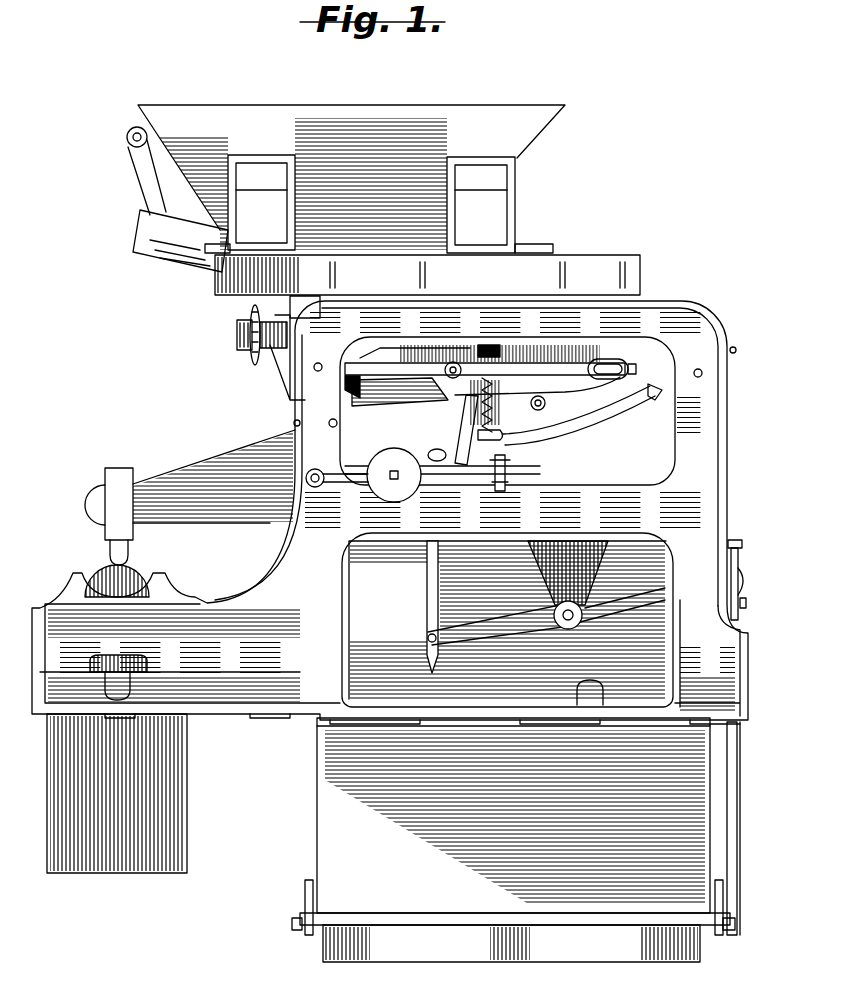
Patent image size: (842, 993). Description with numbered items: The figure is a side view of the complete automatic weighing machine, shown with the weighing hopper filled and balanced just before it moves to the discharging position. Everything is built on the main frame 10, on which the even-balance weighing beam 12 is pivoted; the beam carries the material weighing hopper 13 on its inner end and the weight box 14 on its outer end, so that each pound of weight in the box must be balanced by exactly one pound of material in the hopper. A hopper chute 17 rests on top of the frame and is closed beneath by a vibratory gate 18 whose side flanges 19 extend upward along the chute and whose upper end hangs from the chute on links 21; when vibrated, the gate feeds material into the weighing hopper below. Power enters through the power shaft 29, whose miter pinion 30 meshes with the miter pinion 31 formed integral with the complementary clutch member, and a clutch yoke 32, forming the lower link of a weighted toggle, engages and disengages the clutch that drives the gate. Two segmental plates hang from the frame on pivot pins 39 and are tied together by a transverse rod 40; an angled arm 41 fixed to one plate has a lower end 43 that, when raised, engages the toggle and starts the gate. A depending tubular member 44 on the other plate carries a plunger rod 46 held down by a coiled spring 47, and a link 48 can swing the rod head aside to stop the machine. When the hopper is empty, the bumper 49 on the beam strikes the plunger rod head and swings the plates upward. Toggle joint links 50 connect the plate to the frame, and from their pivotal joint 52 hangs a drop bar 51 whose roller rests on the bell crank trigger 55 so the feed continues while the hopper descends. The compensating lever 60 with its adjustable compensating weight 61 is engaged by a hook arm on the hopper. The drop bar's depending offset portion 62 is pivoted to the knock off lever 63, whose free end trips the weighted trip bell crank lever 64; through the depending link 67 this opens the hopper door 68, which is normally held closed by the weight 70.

The main frame 10 is at (255, 714).
The weighing beam 12 is at (226, 458).
The material weighing hopper 13 is at (356, 816).
The weight box 14 is at (64, 836).
The hopper chute 17 is at (375, 125).
The vibratory gate 18 is at (168, 262).
The side flanges 19 is at (198, 232).
The links 21 is at (142, 162).
The power shaft 29 is at (237, 331).
The miter pinion 30 is at (300, 320).
The miter pinion 31 is at (245, 355).
The clutch yoke 32 is at (306, 302).
The pivot pins 39 is at (522, 280).
The transverse rod 40 is at (538, 411).
The angled arm 41 is at (425, 390).
The lower end of angled arm 43 is at (364, 400).
The depending tubular member 44 is at (496, 345).
The plunger rod 46 is at (500, 378).
The coiled spring 47 is at (500, 430).
The link 48 is at (623, 402).
The bumper 49 is at (488, 476).
The toggle joint links 50 is at (410, 357).
The drop bar 51 is at (455, 425).
The pivotal joint 52 is at (455, 362).
The bell crank trigger 55 is at (441, 448).
The compensating lever 60 is at (340, 480).
The compensating weight 61 is at (390, 503).
The depending offset portion 62 is at (430, 612).
The knock off lever 63 is at (588, 612).
The weighted trip bell crank lever 64 is at (745, 578).
The depending link 67 is at (738, 822).
The hopper door 68 is at (578, 924).
The weight 70 is at (398, 943).